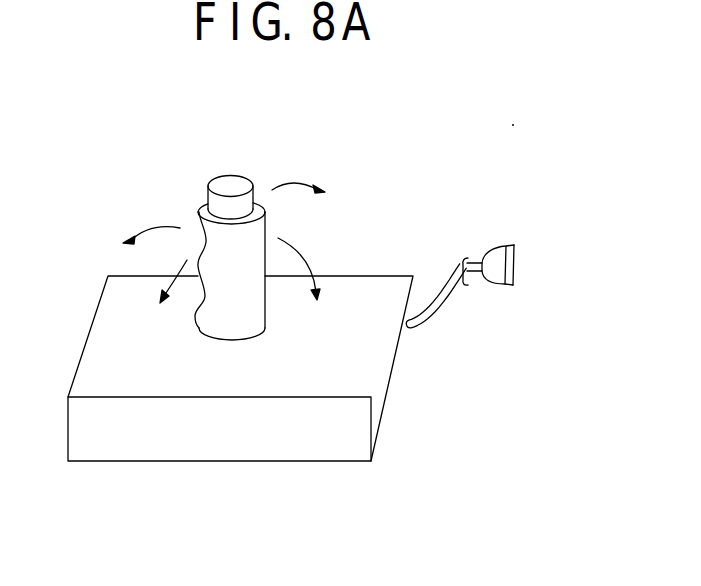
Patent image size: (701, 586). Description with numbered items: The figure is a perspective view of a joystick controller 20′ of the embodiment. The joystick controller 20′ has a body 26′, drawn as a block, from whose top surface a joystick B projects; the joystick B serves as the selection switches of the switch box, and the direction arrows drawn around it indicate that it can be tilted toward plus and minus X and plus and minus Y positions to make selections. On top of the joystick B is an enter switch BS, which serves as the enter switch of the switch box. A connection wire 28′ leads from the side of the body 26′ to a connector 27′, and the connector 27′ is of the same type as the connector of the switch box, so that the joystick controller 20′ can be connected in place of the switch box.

The joystick controller 20′ is at (425, 210).
The body 26′ is at (384, 403).
The connector 27′ is at (493, 286).
The connection wire 28′ is at (442, 300).
The joystick B is at (254, 238).
The enter switch BS is at (230, 186).